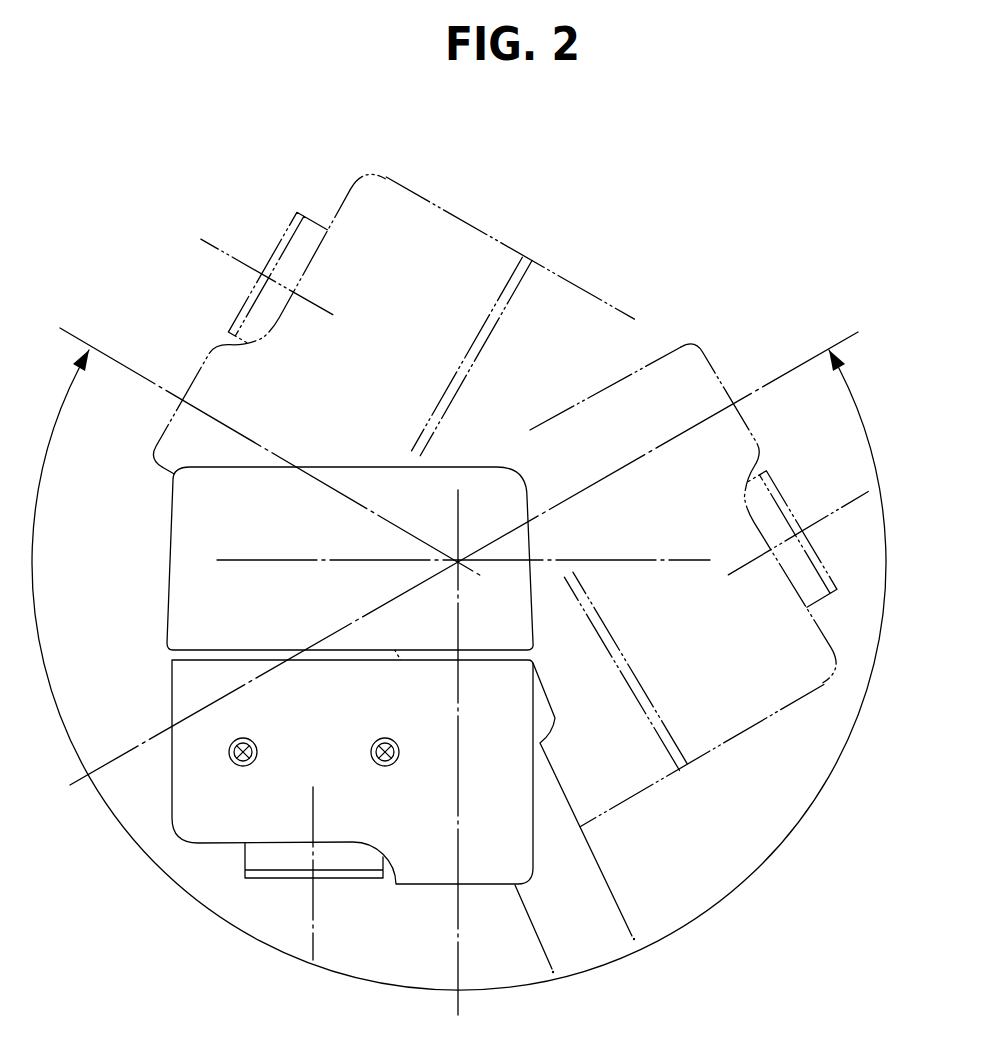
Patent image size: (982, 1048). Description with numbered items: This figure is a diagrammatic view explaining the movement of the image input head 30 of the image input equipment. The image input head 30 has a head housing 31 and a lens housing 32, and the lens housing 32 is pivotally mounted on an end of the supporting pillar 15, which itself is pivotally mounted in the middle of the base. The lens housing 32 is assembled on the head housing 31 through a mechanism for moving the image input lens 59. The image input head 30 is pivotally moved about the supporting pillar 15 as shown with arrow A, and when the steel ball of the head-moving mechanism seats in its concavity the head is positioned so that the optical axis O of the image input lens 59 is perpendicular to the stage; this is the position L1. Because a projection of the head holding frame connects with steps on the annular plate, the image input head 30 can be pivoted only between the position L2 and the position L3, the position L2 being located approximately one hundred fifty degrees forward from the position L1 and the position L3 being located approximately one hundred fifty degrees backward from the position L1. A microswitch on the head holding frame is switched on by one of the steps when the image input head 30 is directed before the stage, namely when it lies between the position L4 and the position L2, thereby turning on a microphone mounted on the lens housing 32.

The supporting pillar 15 is at (605, 910).
The image input head 30 is at (295, 703).
The head housing 31 is at (190, 524).
The lens housing 32 is at (187, 697).
The image input lens 59 is at (342, 880).
The position L1 is at (463, 769).
The position L2 is at (252, 438).
The position L3 is at (674, 430).
The position L4 is at (245, 687).
The optical axis O is at (318, 938).
The arrow A is at (757, 868).